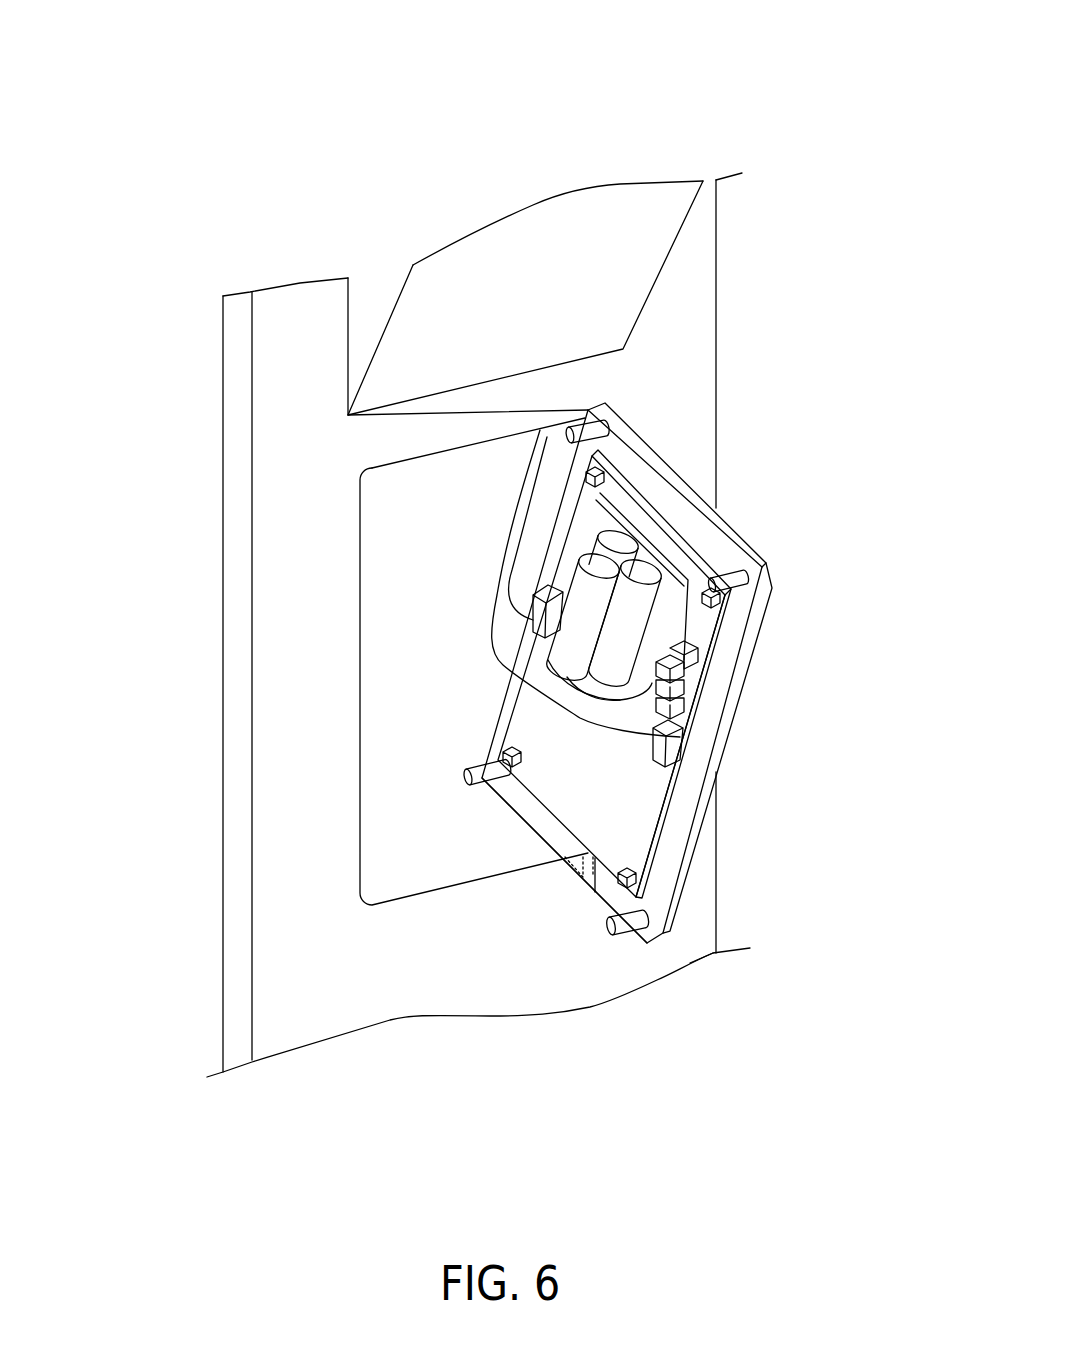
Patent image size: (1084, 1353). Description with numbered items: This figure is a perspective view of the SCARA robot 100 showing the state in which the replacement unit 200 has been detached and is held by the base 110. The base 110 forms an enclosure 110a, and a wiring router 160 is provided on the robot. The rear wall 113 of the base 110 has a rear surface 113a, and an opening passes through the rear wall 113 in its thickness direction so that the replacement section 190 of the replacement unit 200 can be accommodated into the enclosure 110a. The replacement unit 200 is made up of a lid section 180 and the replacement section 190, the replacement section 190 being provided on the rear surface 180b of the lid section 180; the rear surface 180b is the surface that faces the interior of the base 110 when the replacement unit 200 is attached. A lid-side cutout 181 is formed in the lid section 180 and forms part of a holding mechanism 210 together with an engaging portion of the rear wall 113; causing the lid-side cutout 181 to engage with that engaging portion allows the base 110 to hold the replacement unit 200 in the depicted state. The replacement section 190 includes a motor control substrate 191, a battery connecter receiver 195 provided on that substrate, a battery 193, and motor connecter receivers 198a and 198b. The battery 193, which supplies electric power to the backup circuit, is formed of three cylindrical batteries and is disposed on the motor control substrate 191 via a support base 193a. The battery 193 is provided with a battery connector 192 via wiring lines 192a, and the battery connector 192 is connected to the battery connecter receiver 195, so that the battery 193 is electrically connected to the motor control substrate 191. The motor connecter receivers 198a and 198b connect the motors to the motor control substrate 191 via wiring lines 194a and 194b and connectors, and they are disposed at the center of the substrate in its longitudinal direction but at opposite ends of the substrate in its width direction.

The SCARA robot 100 is at (783, 52).
The base 110 is at (431, 677).
The enclosure 110a is at (625, 563).
The rear wall 113 is at (582, 617).
The rear surface 113a is at (762, 929).
The wiring router 160 is at (525, 237).
The lid section 180 is at (669, 674).
The rear surface 180b is at (737, 746).
The lid-side cutout 181 is at (560, 1000).
The replacement section 190 is at (677, 985).
The motor control substrate 191 is at (532, 968).
The battery connector 192 is at (761, 689).
The wiring lines 192a is at (372, 710).
The battery 193 is at (677, 554).
The support base 193a is at (712, 584).
The wiring lines 194a is at (337, 814).
The wiring lines 194b is at (364, 530).
The battery connecter receiver 195 is at (763, 660).
The motor connecter receiver 198a is at (753, 753).
The motor connecter receiver 198b is at (348, 644).
The replacement unit 200 is at (684, 673).
The holding mechanism 210 is at (620, 1024).